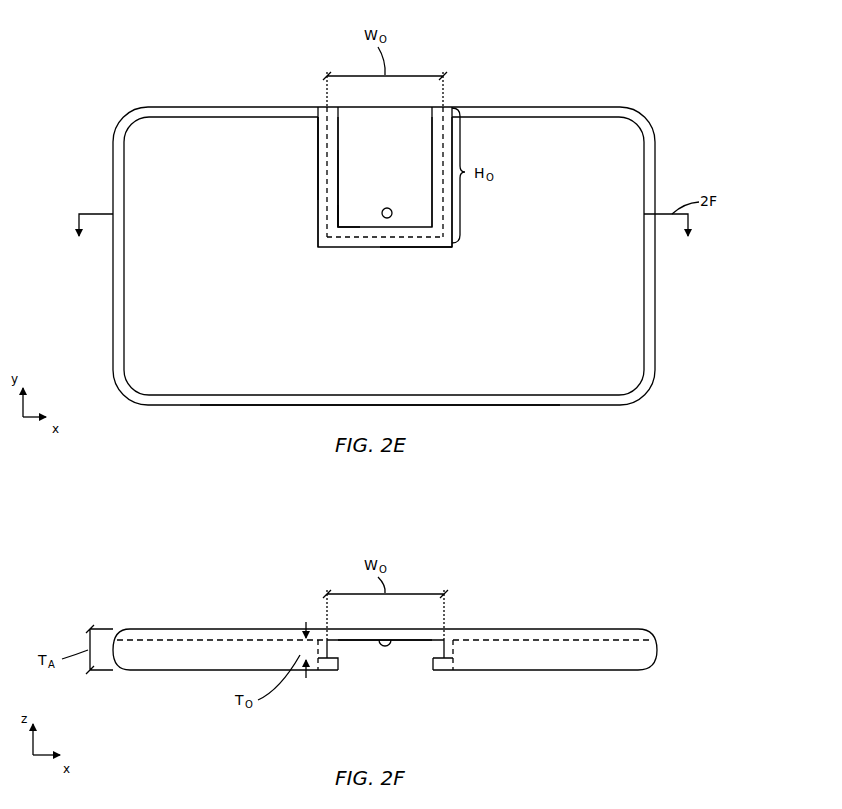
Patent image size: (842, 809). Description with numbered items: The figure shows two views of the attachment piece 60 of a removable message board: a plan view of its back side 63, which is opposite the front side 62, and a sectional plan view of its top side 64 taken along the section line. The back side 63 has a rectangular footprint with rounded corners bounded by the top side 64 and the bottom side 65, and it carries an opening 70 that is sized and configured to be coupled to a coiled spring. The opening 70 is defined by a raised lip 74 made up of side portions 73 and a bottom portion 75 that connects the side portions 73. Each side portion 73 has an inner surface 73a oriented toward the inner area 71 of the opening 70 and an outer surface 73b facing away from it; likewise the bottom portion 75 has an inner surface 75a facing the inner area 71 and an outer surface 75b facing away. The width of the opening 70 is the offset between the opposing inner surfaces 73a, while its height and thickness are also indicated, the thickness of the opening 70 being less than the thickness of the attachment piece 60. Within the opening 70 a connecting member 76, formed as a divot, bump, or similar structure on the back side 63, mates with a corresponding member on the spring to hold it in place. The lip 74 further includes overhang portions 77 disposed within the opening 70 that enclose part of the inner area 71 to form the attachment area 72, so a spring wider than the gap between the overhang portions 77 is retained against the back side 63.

In FIG. 2E, the attachment piece 60 is at (665, 70).
In FIG. 2F, the attachment piece 60 is at (686, 618).
In FIG. 2F, the front side 62 is at (243, 628).
In FIG. 2E, the back side 63 is at (538, 291).
In FIG. 2F, the back side 63 is at (215, 643).
In FIG. 2E, the top side 64 is at (557, 106).
In FIG. 2F, the top side 64 is at (550, 650).
In FIG. 2E, the bottom side 65 is at (528, 406).
In FIG. 2E, the opening 70 is at (402, 96).
In FIG. 2F, the opening 70 is at (343, 678).
In FIG. 2E, the inner area 71 is at (395, 173).
In FIG. 2F, the inner area 71 is at (410, 650).
In FIG. 2E, the attachment area 72 is at (352, 210).
In FIG. 2E, the side portion 73 is at (325, 164).
In FIG. 2E, the inner surface 73a is at (333, 140).
In FIG. 2F, the inner surface 73a is at (437, 648).
In FIG. 2E, the outer surface 73b is at (315, 127).
In FIG. 2F, the outer surface 73b is at (460, 656).
In FIG. 2E, the lip 74 is at (316, 200).
In FIG. 2F, the lip 74 is at (444, 665).
In FIG. 2E, the bottom portion 75 is at (437, 240).
In FIG. 2E, the inner surface 75a is at (415, 234).
In FIG. 2E, the outer surface 75b is at (404, 250).
In FIG. 2E, the connecting member 76 is at (386, 218).
In FIG. 2F, the connecting member 76 is at (385, 650).
In FIG. 2E, the overhang portion 77 is at (347, 238).
In FIG. 2F, the overhang portion 77 is at (322, 672).